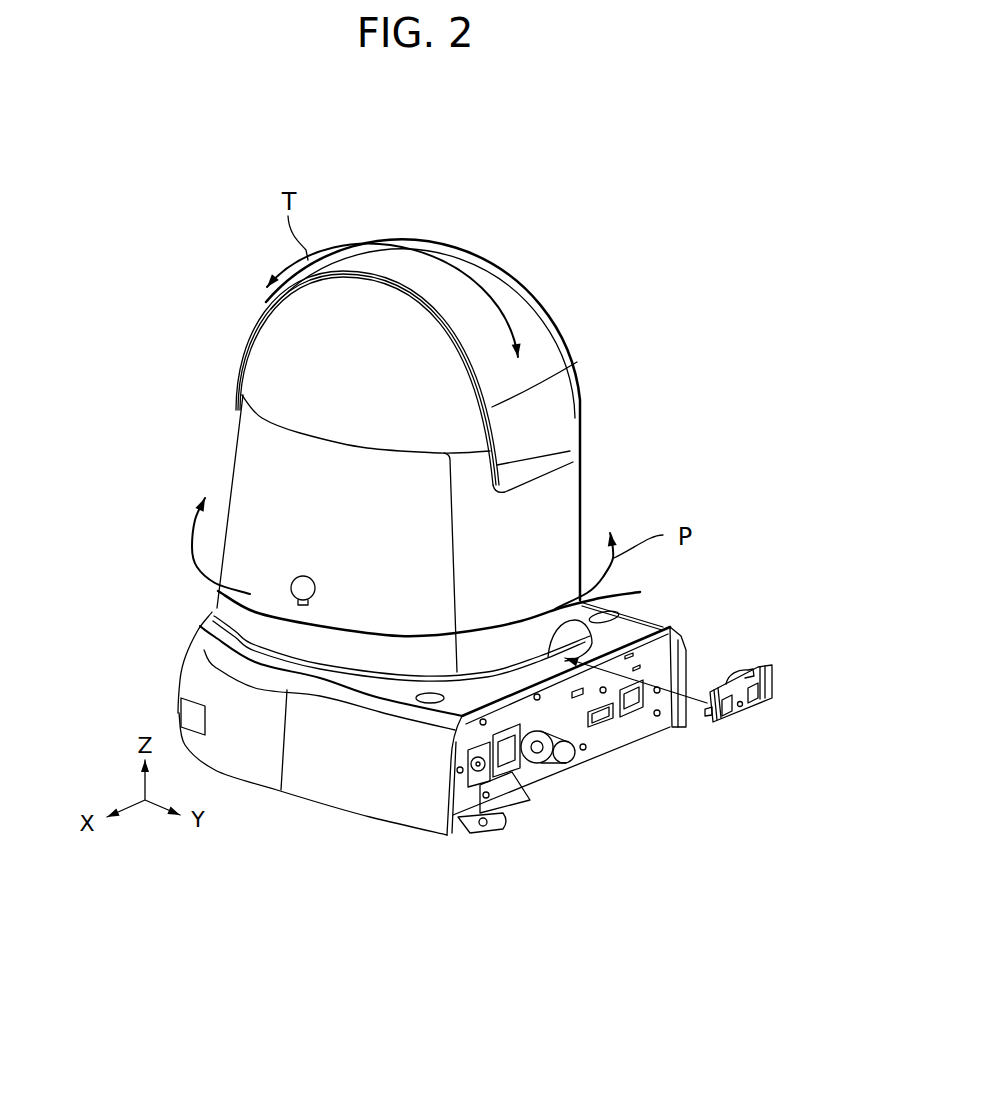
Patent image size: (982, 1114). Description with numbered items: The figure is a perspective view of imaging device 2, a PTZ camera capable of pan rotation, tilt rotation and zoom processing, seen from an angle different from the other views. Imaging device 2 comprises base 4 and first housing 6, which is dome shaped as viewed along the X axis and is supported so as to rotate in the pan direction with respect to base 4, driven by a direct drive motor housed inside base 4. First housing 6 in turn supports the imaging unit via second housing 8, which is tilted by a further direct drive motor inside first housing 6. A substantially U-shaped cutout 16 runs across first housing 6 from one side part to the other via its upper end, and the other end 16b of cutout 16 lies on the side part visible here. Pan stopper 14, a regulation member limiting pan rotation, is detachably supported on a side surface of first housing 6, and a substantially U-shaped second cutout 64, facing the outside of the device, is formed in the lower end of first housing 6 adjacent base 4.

The imaging device 2 is at (532, 238).
The base 4 is at (370, 797).
The first housing 6 is at (275, 465).
The second housing 8 is at (275, 365).
The pan stopper 14 is at (754, 670).
The cutout 16 is at (392, 288).
The other end of cutout 16b is at (533, 474).
The second cutout 64 is at (574, 631).